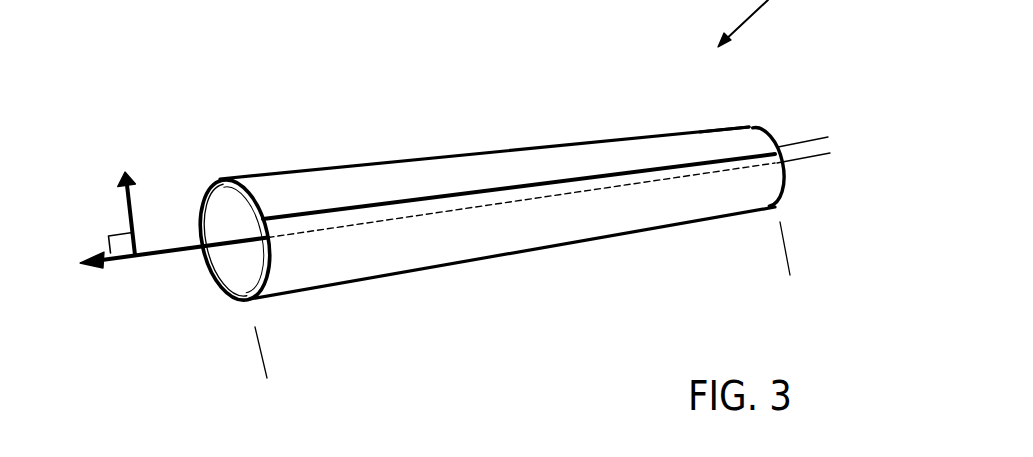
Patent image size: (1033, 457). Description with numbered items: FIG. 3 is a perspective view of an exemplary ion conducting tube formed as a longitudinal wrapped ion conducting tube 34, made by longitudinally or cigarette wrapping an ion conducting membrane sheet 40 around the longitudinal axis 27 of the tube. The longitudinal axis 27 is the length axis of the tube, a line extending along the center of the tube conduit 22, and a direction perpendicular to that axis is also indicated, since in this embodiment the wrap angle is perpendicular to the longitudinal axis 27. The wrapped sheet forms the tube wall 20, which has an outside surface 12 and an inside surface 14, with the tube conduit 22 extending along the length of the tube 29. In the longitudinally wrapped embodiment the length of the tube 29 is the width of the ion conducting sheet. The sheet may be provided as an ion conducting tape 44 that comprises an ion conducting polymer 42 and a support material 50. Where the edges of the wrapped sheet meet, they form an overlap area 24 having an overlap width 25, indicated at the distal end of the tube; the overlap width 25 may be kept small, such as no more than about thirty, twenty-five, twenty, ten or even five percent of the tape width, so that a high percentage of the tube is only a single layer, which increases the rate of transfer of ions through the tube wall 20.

The outside surface 12 is at (231, 178).
The inside surface 14 is at (238, 275).
The tube wall 20 is at (203, 203).
The tube conduit 22 is at (228, 252).
The overlap area 24 is at (322, 227).
The overlap width 25 is at (840, 197).
The longitudinal axis 27 is at (172, 248).
The length of the tube 29 is at (785, 272).
The longitudinal wrapped ion conducting tube 34 is at (722, 125).
The ion conducting membrane sheet 40 is at (440, 175).
The ion conducting polymer 42 is at (545, 160).
The ion conducting tape 44 is at (290, 183).
The support material 50 is at (657, 152).